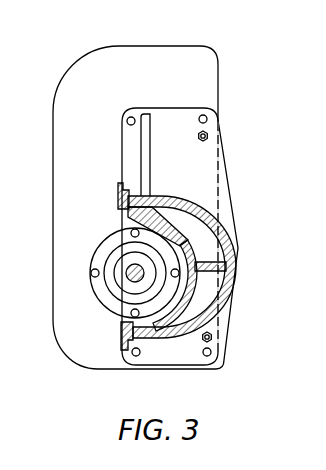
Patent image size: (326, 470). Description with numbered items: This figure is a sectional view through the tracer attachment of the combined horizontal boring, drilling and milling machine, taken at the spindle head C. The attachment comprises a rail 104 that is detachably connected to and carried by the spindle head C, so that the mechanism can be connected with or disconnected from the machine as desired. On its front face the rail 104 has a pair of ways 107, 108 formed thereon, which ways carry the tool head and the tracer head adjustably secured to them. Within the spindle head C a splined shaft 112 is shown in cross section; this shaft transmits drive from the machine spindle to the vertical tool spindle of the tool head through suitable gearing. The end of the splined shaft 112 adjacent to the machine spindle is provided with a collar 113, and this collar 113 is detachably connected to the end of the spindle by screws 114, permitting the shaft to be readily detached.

The spindle head C is at (218, 70).
The rail 104 is at (207, 160).
The way 107 is at (118, 190).
The way 108 is at (119, 326).
The splined shaft 112 is at (129, 278).
The collar 113 is at (112, 252).
The screws 114 is at (92, 276).